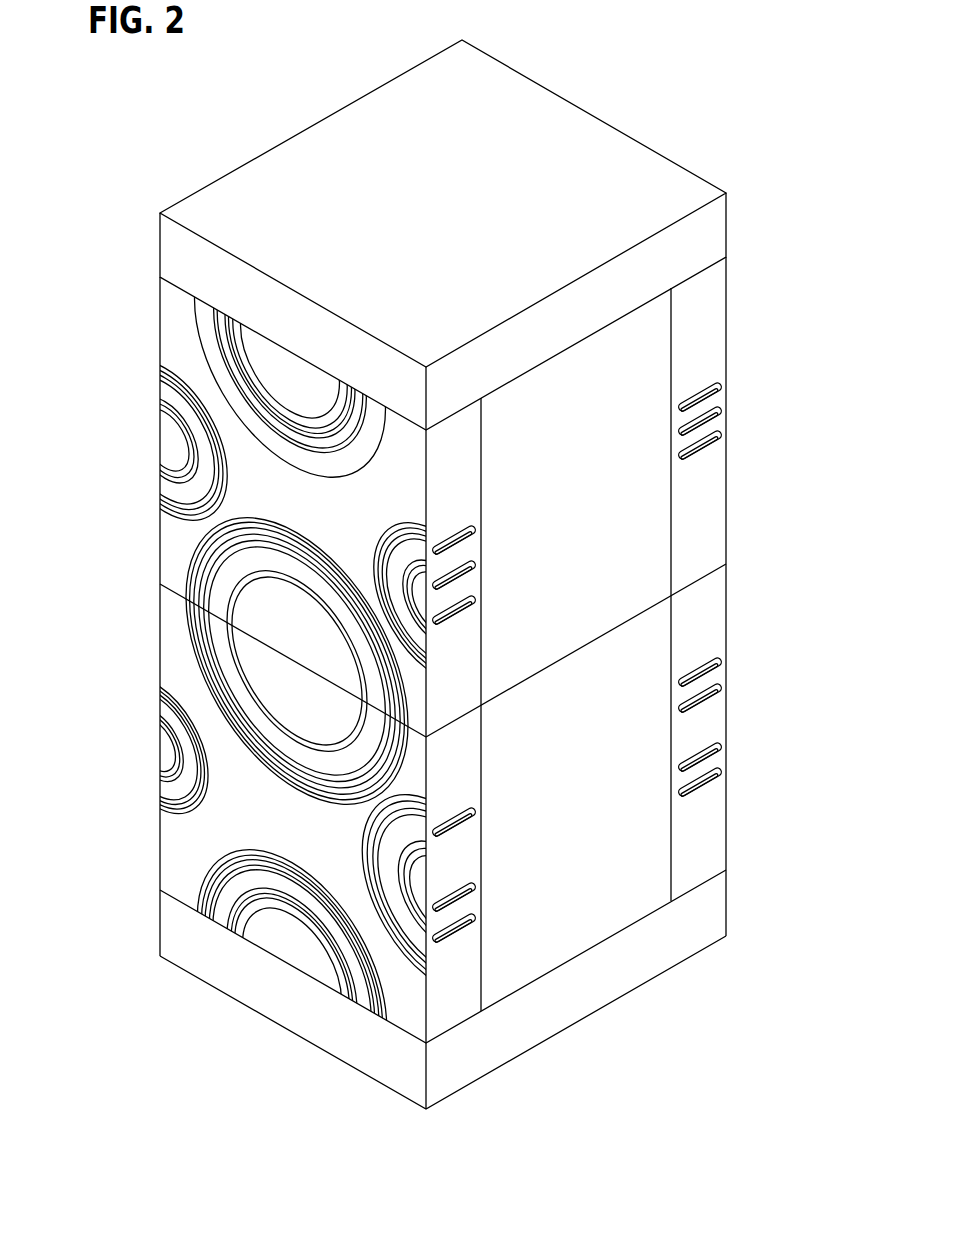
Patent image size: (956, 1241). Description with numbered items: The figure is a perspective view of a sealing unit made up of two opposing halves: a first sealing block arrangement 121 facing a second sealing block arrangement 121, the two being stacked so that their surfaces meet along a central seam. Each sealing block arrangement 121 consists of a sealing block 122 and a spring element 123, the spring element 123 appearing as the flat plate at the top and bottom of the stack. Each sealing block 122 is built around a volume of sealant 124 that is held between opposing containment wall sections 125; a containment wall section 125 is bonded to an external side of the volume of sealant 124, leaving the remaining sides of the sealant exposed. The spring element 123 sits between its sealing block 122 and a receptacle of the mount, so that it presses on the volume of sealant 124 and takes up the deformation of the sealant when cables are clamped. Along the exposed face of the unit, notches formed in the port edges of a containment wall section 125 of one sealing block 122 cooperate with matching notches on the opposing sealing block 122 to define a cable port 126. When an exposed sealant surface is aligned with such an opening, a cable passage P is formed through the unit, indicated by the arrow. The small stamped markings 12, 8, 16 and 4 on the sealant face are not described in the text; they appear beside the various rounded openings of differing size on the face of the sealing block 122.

The sealing block arrangement 121 is at (143, 578).
The sealing block 122 is at (737, 929).
The spring element 123 is at (445, 231).
The volume of sealant 124 is at (600, 508).
The containment wall section 125 is at (327, 513).
The cable port 126 is at (302, 725).
The cable passage P is at (340, 643).
The port size marking 12 is at (291, 660).
The port size marking 8 is at (284, 663).
The port size marking 16 is at (291, 600).
The port size marking 4 is at (282, 662).